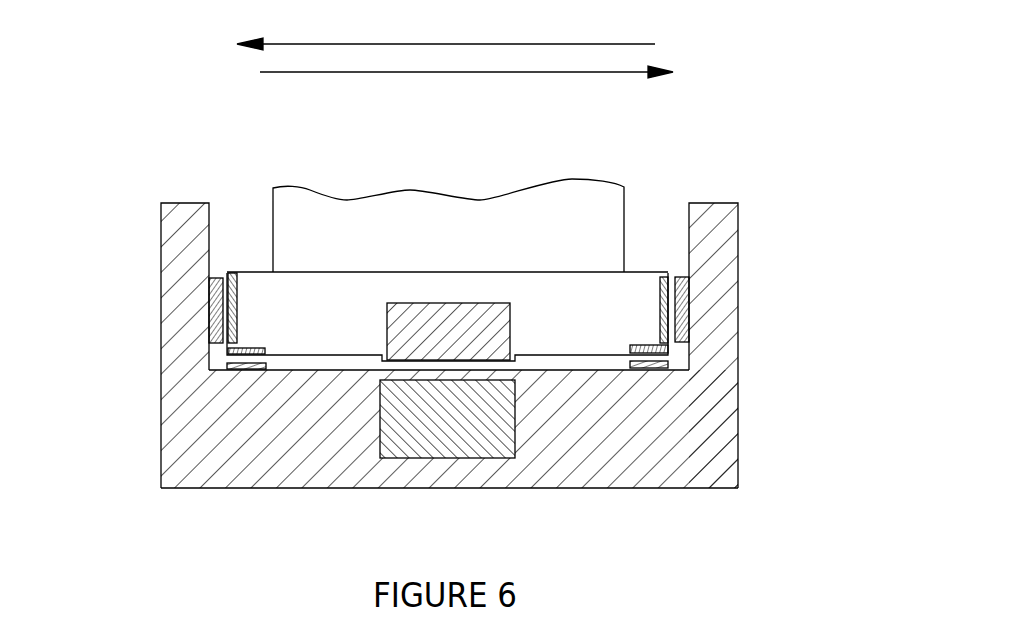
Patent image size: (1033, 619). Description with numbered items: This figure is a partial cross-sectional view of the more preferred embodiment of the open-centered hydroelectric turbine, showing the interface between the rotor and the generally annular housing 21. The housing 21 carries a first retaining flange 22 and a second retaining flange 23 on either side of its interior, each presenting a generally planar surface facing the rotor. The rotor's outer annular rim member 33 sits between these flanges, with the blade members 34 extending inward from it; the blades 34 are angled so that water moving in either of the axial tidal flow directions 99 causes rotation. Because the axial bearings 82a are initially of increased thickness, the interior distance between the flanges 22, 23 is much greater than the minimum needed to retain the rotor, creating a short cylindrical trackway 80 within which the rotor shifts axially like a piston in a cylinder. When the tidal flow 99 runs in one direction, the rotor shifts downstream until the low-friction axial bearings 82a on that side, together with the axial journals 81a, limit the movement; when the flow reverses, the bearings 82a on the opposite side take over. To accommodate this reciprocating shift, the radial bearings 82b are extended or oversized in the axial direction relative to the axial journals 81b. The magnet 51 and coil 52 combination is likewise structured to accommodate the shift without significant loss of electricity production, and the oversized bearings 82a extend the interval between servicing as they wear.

The axial tidal flow directions 99 is at (383, 68).
The housing 21 is at (665, 485).
The first retaining flange 22 is at (160, 267).
The second retaining flange 23 is at (739, 263).
The outer annular rim member 33 is at (477, 285).
The blade members 34 is at (532, 213).
The magnet 51 is at (408, 332).
The coil 52 is at (477, 418).
The trackway 80 is at (303, 362).
The axial journals 81a is at (237, 273).
The axial journals 81b is at (256, 347).
The axial bearings 82a is at (215, 277).
The radial bearings 82b is at (225, 372).